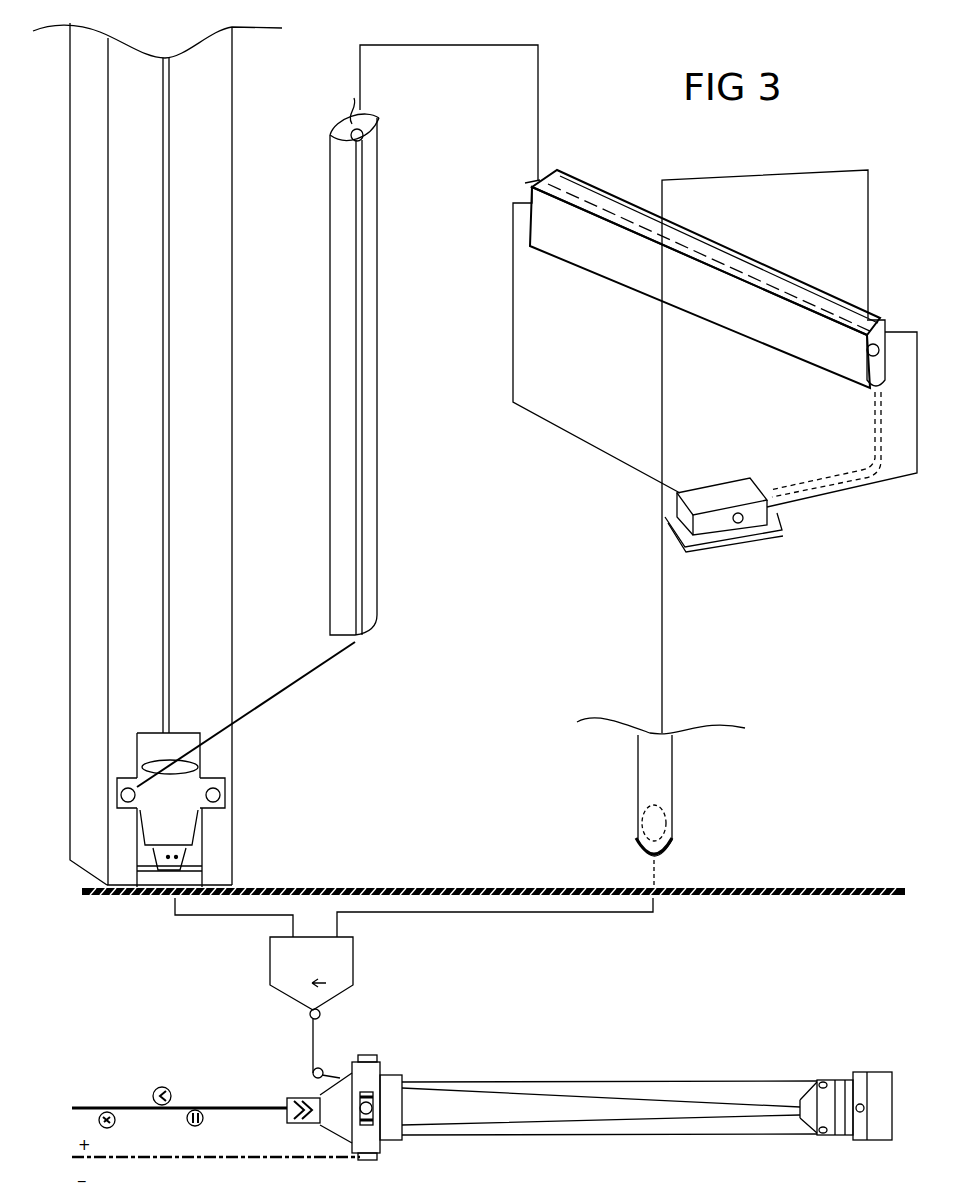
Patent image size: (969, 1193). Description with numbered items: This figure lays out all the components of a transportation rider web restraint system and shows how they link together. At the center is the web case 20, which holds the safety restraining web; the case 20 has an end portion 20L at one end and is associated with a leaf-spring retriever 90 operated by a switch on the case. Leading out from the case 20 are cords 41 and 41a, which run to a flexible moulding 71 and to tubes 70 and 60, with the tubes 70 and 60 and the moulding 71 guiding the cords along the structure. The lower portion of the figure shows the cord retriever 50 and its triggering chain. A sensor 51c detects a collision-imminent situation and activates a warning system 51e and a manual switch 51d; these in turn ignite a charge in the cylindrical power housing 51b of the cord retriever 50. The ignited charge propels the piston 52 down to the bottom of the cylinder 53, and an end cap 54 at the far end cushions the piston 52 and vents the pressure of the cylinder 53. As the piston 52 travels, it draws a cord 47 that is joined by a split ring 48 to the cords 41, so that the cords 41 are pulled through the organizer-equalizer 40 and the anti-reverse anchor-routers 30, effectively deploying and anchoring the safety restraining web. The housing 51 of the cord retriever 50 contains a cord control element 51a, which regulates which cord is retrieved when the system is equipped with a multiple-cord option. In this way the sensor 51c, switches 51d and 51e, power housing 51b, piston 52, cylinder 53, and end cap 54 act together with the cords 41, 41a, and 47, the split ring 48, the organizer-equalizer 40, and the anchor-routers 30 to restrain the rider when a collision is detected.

The tube 70 is at (242, 88).
The flexible moulding 71 is at (386, 193).
The cord 41 is at (543, 82).
The cord 41a is at (505, 302).
The web case 20 is at (622, 286).
The rail end cap 20L is at (867, 357).
The leaf-spring retriever 90 is at (743, 557).
The tube 60 is at (637, 770).
The anti-reverse anchor-router 30 is at (200, 807).
The organizer-equalizer 40 is at (388, 983).
The cord 47 is at (303, 1041).
The split ring 48 is at (369, 1084).
The cord retriever 50 is at (578, 1084).
The housing 51 is at (403, 1075).
The cord control element 51a is at (373, 1056).
The cylindrical power housing 51b is at (292, 1097).
The sensor 51c is at (163, 1087).
The manual switch 51d is at (205, 1108).
The warning system 51e is at (107, 1112).
The piston 52 is at (828, 1090).
The cylinder 53 is at (609, 1088).
The end cap 54 is at (878, 1082).